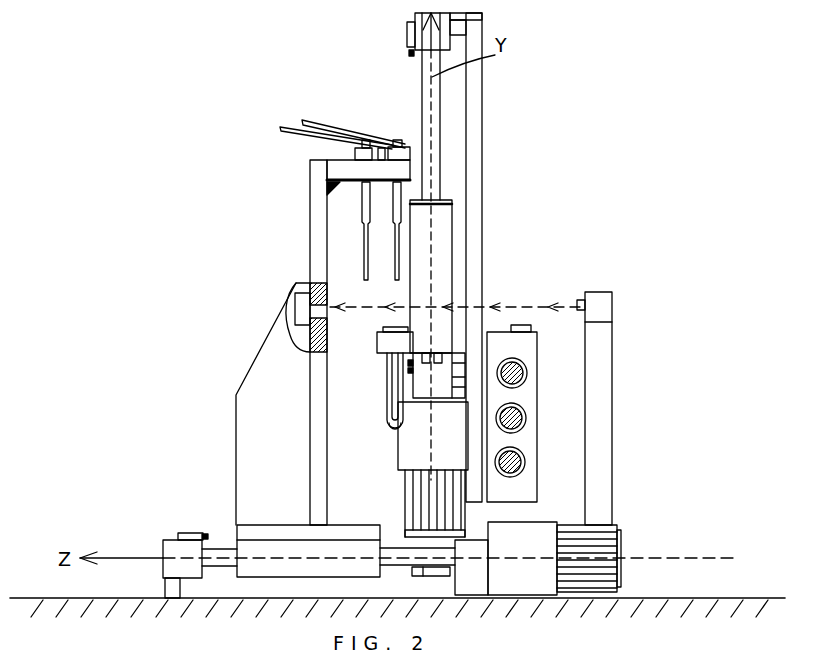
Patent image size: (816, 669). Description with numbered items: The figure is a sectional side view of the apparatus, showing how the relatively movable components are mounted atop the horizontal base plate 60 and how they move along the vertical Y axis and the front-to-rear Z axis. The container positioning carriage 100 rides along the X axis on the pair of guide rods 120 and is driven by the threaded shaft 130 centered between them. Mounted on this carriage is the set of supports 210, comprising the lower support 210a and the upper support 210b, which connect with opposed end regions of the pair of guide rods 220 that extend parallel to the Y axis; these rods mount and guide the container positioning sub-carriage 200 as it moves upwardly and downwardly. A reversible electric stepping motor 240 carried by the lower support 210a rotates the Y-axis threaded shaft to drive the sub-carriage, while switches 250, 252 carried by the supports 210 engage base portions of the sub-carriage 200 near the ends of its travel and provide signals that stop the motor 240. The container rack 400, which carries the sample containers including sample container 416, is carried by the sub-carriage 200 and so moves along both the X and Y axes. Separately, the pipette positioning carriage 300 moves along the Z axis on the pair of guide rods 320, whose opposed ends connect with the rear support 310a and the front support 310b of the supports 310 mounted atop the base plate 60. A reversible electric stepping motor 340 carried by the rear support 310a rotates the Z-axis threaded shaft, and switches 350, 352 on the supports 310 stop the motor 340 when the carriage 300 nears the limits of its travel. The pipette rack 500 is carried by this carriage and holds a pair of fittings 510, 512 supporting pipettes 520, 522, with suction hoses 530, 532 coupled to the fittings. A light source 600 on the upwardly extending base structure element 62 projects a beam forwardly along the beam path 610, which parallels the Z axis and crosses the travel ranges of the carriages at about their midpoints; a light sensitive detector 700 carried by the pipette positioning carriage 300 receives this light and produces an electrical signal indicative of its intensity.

The base plate 60 is at (725, 591).
The base structure element 62 is at (607, 390).
The container positioning carriage 100 is at (540, 343).
The guide rods 120 is at (523, 365).
The threaded shaft 130 is at (524, 419).
The container positioning sub-carriage 200 is at (466, 218).
The supports 210 is at (470, 35).
The lower support 210a is at (442, 385).
The upper support 210b is at (417, 18).
The guide rods 220 is at (438, 83).
The reversible electric stepping motor 240 is at (410, 517).
The switch 250 is at (410, 386).
The switch 252 is at (409, 43).
The pipette positioning carriage 300 is at (247, 362).
The supports 310 is at (162, 540).
The rear support 310a is at (472, 583).
The front support 310b is at (172, 570).
The guide rods 320 is at (397, 573).
The reversible electric stepping motor 340 is at (612, 535).
The switch 350 is at (410, 578).
The switch 352 is at (180, 533).
The container rack 400 is at (370, 343).
The sample container 416 is at (393, 419).
The pipette rack 500 is at (332, 188).
The fitting 510 is at (353, 152).
The fitting 512 is at (407, 143).
The pipette 520 is at (362, 223).
The pipette 522 is at (397, 248).
The suction hose 530 is at (292, 137).
The suction hose 532 is at (341, 111).
The light source 600 is at (613, 307).
The beam path 610 is at (475, 306).
The light sensitive detector 700 is at (328, 298).